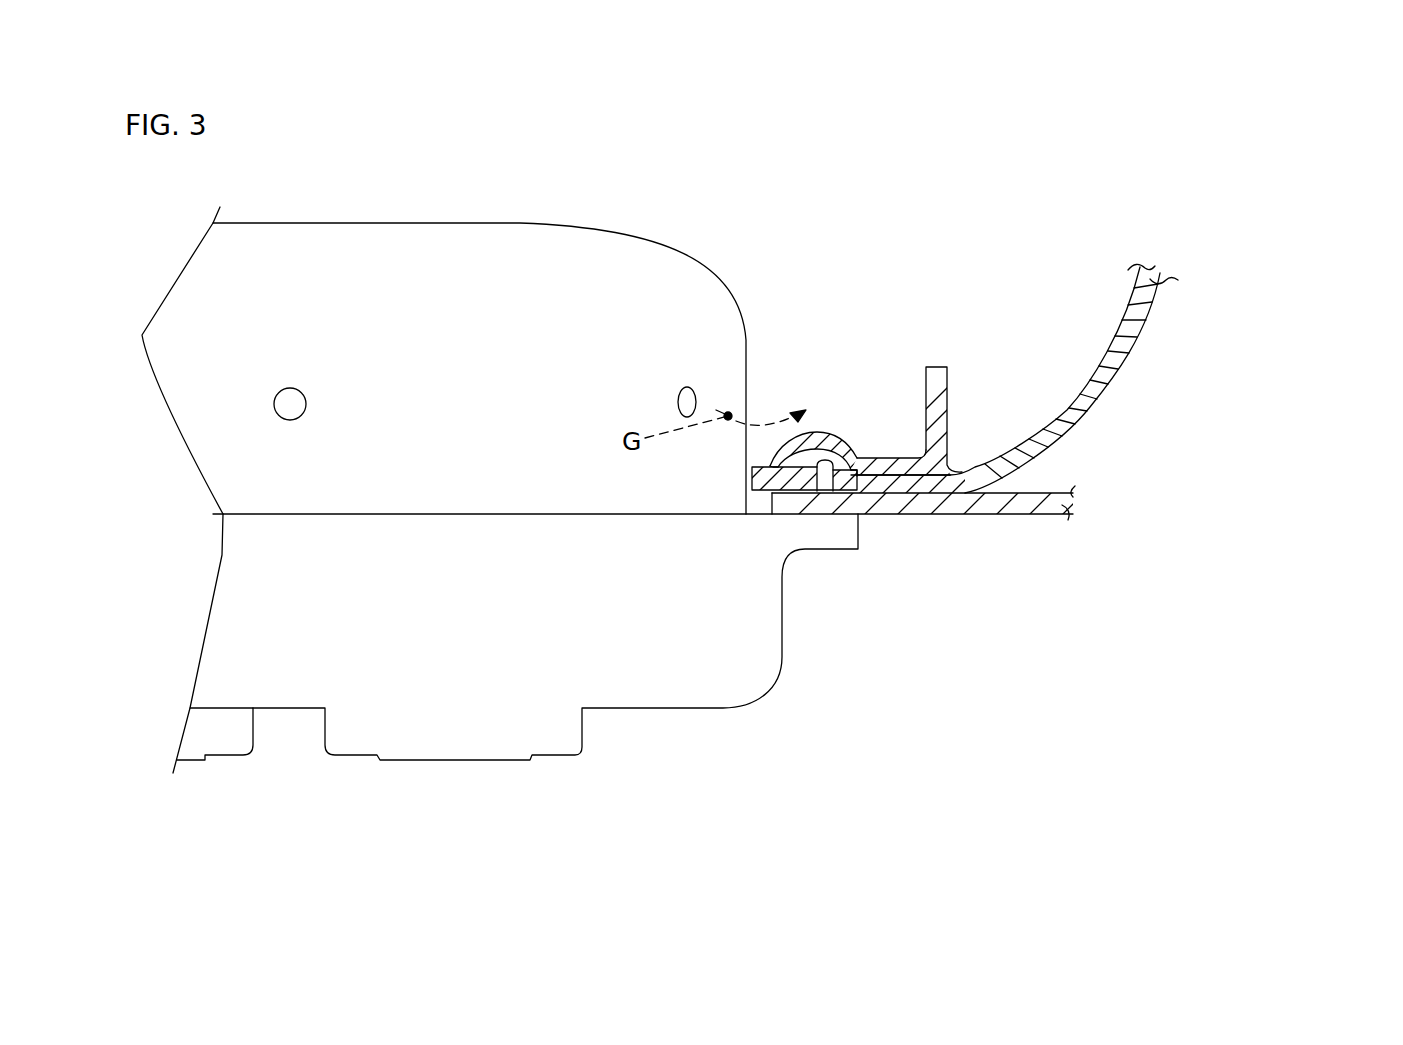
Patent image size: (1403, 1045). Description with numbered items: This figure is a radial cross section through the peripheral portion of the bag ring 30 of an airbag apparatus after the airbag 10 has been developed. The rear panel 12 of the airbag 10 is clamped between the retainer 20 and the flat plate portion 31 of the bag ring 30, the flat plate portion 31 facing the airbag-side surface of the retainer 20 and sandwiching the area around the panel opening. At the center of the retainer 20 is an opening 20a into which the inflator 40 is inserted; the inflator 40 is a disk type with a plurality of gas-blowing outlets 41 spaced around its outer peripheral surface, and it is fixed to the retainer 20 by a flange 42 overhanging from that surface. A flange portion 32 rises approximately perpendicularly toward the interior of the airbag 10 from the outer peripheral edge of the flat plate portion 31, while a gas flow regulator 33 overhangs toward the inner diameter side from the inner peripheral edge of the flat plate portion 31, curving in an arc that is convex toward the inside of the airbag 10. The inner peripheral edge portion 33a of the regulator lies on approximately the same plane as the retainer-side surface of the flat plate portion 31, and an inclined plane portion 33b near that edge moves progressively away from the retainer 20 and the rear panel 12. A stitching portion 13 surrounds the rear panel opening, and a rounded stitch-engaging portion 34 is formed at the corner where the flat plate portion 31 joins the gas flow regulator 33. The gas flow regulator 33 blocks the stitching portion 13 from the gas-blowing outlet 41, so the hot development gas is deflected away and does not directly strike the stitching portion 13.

The airbag 10 is at (1115, 378).
The rear panel 12 is at (913, 484).
The stitching portion 13 is at (825, 491).
The retainer 20 is at (988, 514).
The opening 20a is at (760, 514).
The bag ring 30 is at (893, 321).
The flat plate portion 31 is at (880, 459).
The flange portion 32 is at (947, 389).
The gas flow regulator 33 is at (759, 440).
The inner peripheral edge portion 33a is at (773, 463).
The inclined plane portion 33b is at (779, 446).
The stitch-engaging portion 34 is at (853, 474).
The inflator 40 is at (453, 223).
The gas-blowing outlet 41 is at (692, 395).
The flange 42 is at (847, 549).